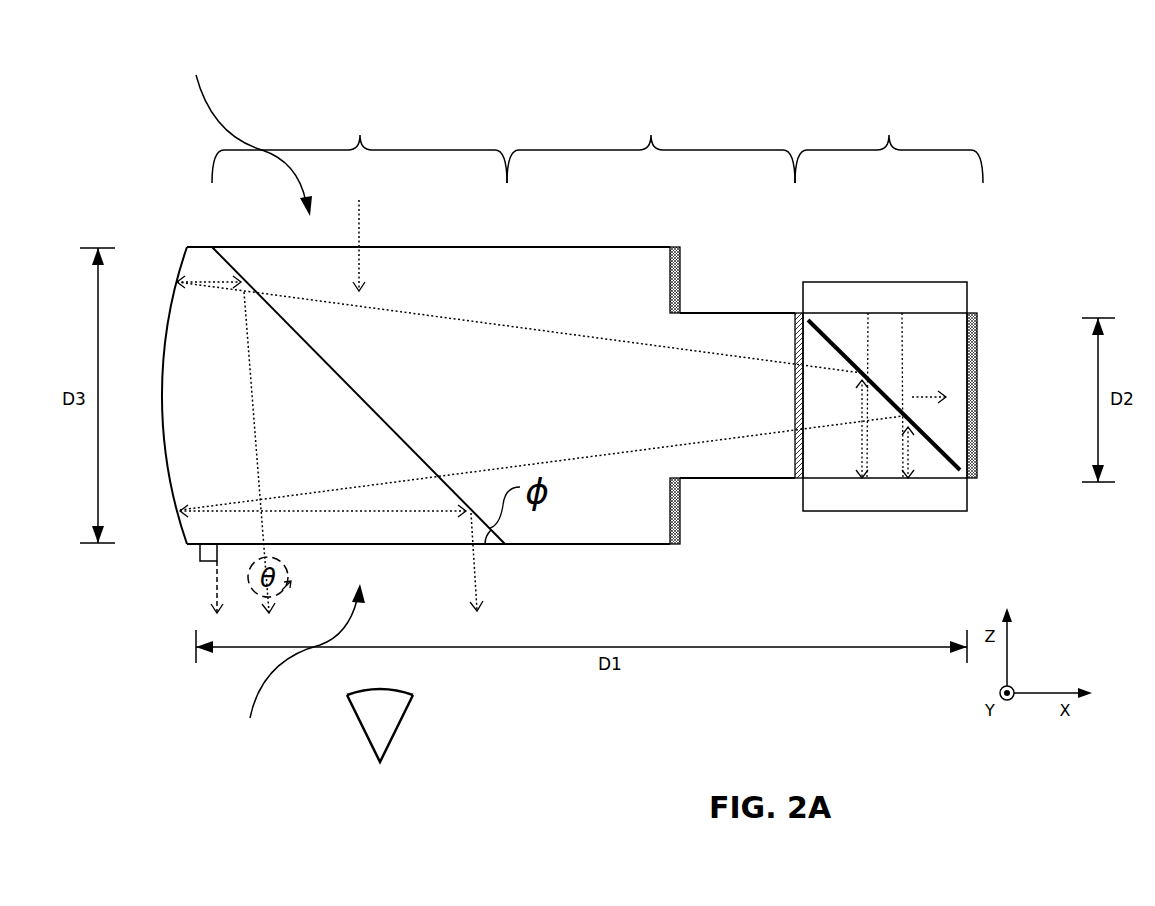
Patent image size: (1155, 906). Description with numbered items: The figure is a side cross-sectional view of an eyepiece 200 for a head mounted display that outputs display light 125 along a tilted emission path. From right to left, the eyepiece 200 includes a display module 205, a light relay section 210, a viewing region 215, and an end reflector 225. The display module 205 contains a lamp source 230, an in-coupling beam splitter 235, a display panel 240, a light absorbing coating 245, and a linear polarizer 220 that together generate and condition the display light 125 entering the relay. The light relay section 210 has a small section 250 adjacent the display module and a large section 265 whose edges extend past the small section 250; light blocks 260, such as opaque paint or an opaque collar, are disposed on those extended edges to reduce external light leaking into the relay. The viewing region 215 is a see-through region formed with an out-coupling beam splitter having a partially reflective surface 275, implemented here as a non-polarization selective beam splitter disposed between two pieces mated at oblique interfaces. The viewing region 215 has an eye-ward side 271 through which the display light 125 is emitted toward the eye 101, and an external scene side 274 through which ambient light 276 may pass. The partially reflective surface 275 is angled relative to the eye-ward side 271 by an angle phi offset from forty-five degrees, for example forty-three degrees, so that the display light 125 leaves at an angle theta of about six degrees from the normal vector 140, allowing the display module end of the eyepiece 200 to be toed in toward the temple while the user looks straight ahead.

The eyepiece 200 is at (1088, 58).
The external scene side 274 is at (218, 118).
The eye-ward side 271 is at (284, 677).
The viewing region 215 is at (359, 130).
The light relay section 210 is at (651, 130).
The display module 205 is at (889, 128).
The large section 265 is at (658, 277).
The end reflector 225 is at (180, 530).
The small section 250 is at (794, 342).
The light blocks 260 is at (680, 272).
The linear polarizer 220 is at (795, 414).
The lamp source 230 is at (920, 282).
The in-coupling beam splitter 235 is at (958, 342).
The display panel 240 is at (906, 503).
The light absorbing coating 245 is at (977, 410).
The partially reflective surface 275 is at (360, 395).
The ambient light 276 is at (366, 230).
The display light 125 is at (595, 337).
The normal vector 140 is at (210, 582).
The eye 101 is at (366, 727).